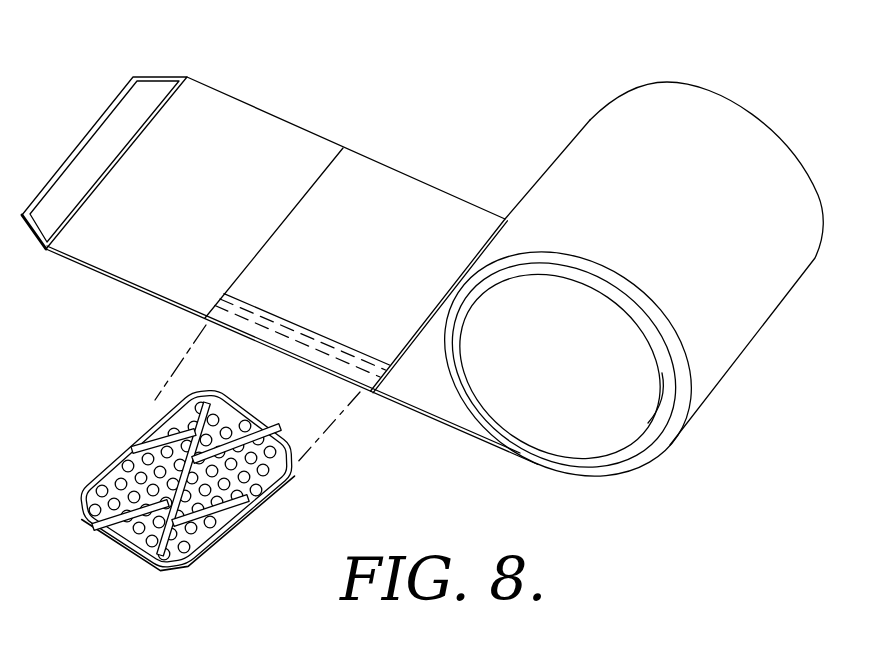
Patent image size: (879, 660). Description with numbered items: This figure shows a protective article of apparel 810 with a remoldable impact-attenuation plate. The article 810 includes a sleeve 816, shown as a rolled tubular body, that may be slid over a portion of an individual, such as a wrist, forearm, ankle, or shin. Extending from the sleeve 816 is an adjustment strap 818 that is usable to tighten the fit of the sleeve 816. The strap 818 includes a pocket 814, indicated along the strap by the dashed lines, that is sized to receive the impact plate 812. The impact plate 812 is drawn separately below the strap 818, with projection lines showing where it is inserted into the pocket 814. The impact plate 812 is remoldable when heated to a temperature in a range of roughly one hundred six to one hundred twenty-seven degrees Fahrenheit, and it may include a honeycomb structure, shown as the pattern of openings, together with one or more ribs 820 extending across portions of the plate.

The protective article of apparel 810 is at (422, 276).
The impact plate 812 is at (187, 504).
The pocket 814 is at (242, 346).
The sleeve 816 is at (735, 115).
The adjustment strap 818 is at (260, 100).
The ribs 820 is at (113, 523).